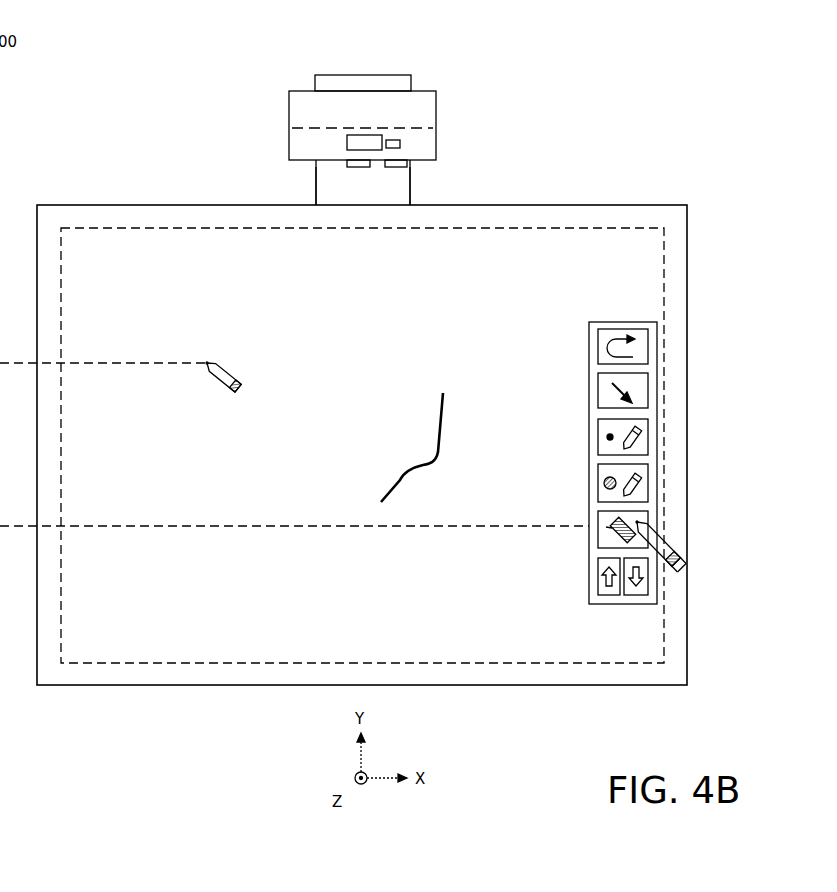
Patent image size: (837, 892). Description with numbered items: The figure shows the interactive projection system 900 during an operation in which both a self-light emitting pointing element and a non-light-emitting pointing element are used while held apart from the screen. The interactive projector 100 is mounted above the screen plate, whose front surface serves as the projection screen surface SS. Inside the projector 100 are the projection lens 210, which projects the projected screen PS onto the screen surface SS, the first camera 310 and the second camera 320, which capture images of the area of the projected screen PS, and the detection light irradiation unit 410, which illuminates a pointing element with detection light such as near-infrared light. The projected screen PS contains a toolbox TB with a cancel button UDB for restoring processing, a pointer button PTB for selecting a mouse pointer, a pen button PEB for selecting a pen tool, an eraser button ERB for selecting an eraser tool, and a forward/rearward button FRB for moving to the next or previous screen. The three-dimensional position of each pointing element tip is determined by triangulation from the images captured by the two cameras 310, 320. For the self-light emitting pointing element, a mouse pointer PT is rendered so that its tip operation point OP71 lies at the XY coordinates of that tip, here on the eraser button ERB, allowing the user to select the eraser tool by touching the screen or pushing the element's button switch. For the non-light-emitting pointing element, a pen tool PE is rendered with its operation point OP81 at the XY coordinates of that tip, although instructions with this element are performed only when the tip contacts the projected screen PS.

The interactive projection system 900 is at (663, 108).
The interactive projector 100 is at (436, 108).
The projection lens 210 is at (347, 142).
The first camera 310 is at (400, 145).
The second camera 320 is at (410, 163).
The detection light irradiation unit 410 is at (347, 162).
The projection screen surface SS is at (92, 207).
The projected screen PS is at (176, 228).
The pen tool PE is at (230, 372).
The operation point OP81 is at (207, 363).
The toolbox TB is at (600, 322).
The cancel button UDB is at (589, 345).
The pointer button PTB is at (589, 393).
The pen button PEB is at (589, 437).
The eraser button ERB is at (589, 524).
The forward/rearward button FRB is at (597, 564).
The mouse pointer PT is at (683, 566).
The operation point OP71 is at (640, 521).